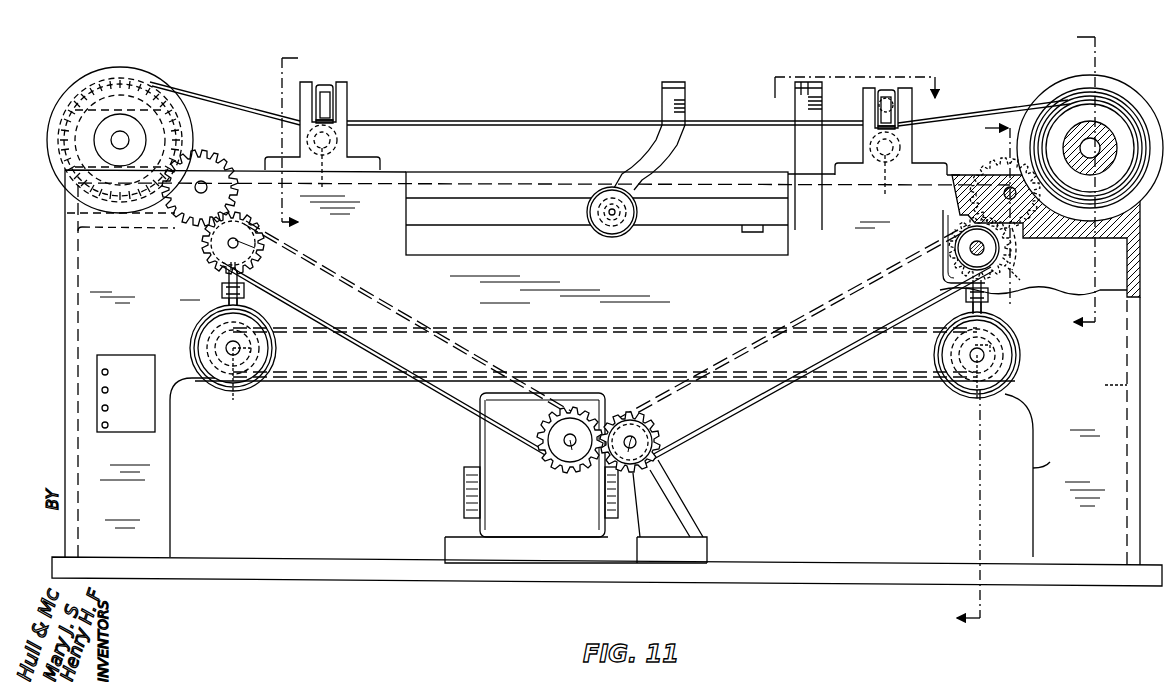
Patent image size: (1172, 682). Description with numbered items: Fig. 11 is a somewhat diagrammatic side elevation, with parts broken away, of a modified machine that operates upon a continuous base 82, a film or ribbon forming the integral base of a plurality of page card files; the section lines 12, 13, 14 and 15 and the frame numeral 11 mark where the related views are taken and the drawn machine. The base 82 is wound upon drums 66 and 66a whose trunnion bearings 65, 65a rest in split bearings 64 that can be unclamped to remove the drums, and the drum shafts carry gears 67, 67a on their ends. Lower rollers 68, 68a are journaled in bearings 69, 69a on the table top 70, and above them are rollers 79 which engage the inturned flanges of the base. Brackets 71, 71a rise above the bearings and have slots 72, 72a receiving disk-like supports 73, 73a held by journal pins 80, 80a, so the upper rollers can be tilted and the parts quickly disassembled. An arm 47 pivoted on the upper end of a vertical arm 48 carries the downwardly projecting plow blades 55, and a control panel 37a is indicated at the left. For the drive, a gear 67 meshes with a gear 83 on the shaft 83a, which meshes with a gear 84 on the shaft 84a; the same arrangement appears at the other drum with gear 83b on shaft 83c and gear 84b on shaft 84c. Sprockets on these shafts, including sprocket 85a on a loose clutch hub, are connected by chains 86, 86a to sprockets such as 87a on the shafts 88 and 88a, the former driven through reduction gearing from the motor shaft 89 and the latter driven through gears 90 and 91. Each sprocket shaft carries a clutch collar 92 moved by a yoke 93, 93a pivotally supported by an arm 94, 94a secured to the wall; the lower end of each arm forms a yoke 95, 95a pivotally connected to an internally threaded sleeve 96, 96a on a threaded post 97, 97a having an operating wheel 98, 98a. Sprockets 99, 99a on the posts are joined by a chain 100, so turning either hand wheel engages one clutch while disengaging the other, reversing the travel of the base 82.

The Fig. 11 section line 11 is at (78, 452).
The section line 12— 12 is at (1085, 210).
The side wall 13 is at (991, 372).
The section line 14— 14 is at (303, 134).
The section line 15— 15 is at (855, 92).
The control panel 37a is at (168, 348).
The arm 47 is at (812, 88).
The vertical arm 48 is at (797, 110).
The blades 55 is at (820, 104).
The split bearing 64 is at (50, 143).
The trunnion bearing 65 is at (115, 142).
The trunnion bearing 65a is at (1092, 140).
The drum 66 is at (140, 78).
The drum 66a is at (1118, 108).
The gear 67 is at (75, 95).
The gear 67a is at (1100, 245).
The roller 68 is at (305, 141).
The bearing 68a is at (885, 147).
The bearing 69 is at (322, 180).
The bearing bore 69a is at (898, 120).
The table top 70 is at (400, 170).
The bracket 71 is at (350, 132).
The bracket 71a is at (905, 148).
The slot 72 is at (335, 110).
The guide block 72a is at (886, 110).
The disk-like support 73 is at (330, 95).
The disk-like support 73a is at (890, 95).
The roller 79 is at (300, 104).
The journal pin 80 is at (348, 92).
The belt clamp 80a is at (886, 127).
The base 82 is at (702, 128).
The gear 83 is at (218, 152).
The shaft 83a is at (196, 192).
The gear 83b is at (1016, 250).
The shaft 83c is at (1003, 194).
The gear 84 is at (248, 222).
The shaft 84a is at (210, 248).
The gear 84b is at (1020, 275).
The shaft 84c is at (960, 260).
The sprocket 85a is at (955, 242).
The chain 86 is at (340, 280).
The chain 86a is at (870, 285).
The sprocket 87a is at (650, 440).
The shaft 88 is at (567, 445).
The shaft 88a is at (655, 458).
The motor shaft 89 is at (464, 497).
The gear 90 is at (583, 425).
The gear 91 is at (620, 415).
The clutch collar 92 is at (250, 268).
The yoke 93 is at (244, 302).
The yoke 93a is at (966, 310).
The arm 94 is at (222, 290).
The arm 94a is at (990, 300).
The yoke 95 is at (204, 322).
The yoke 95a is at (935, 388).
The internally threaded sleeve 96 is at (262, 378).
The internally threaded sleeve 96a is at (952, 392).
The post 97 is at (233, 380).
The post 97a is at (1012, 350).
The operating wheel 98 is at (215, 382).
The operating wheel 98a is at (948, 360).
The sprocket 99 is at (262, 348).
The sprocket 99a is at (940, 342).
The chain 100 is at (640, 320).